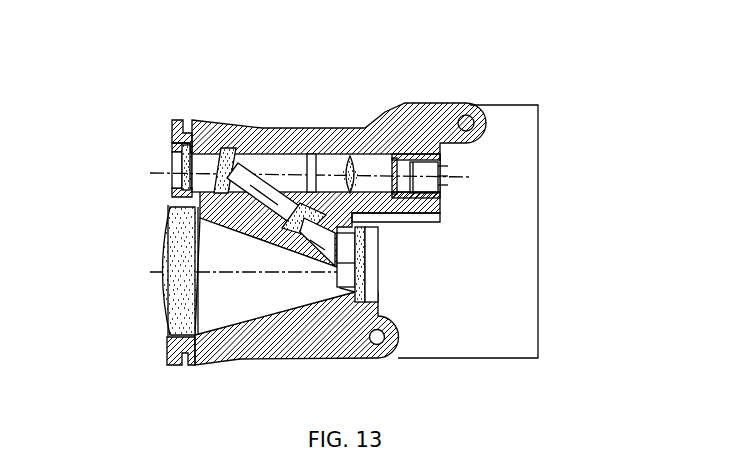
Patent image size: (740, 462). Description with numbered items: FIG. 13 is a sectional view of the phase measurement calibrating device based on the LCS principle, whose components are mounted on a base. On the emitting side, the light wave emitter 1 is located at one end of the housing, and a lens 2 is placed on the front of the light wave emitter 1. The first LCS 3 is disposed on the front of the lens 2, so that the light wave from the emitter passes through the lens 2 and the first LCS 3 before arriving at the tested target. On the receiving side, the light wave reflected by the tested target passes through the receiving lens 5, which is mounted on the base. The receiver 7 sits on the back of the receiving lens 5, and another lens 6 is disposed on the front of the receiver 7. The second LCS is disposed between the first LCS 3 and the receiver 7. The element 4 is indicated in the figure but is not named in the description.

The light wave emitter 1 is at (420, 162).
The lens 2 is at (358, 156).
The first LCS 3 is at (236, 152).
The housing plate 4 is at (352, 222).
The receiving lens 5 is at (185, 292).
The lens 6 is at (365, 259).
The receiver 7 is at (368, 283).